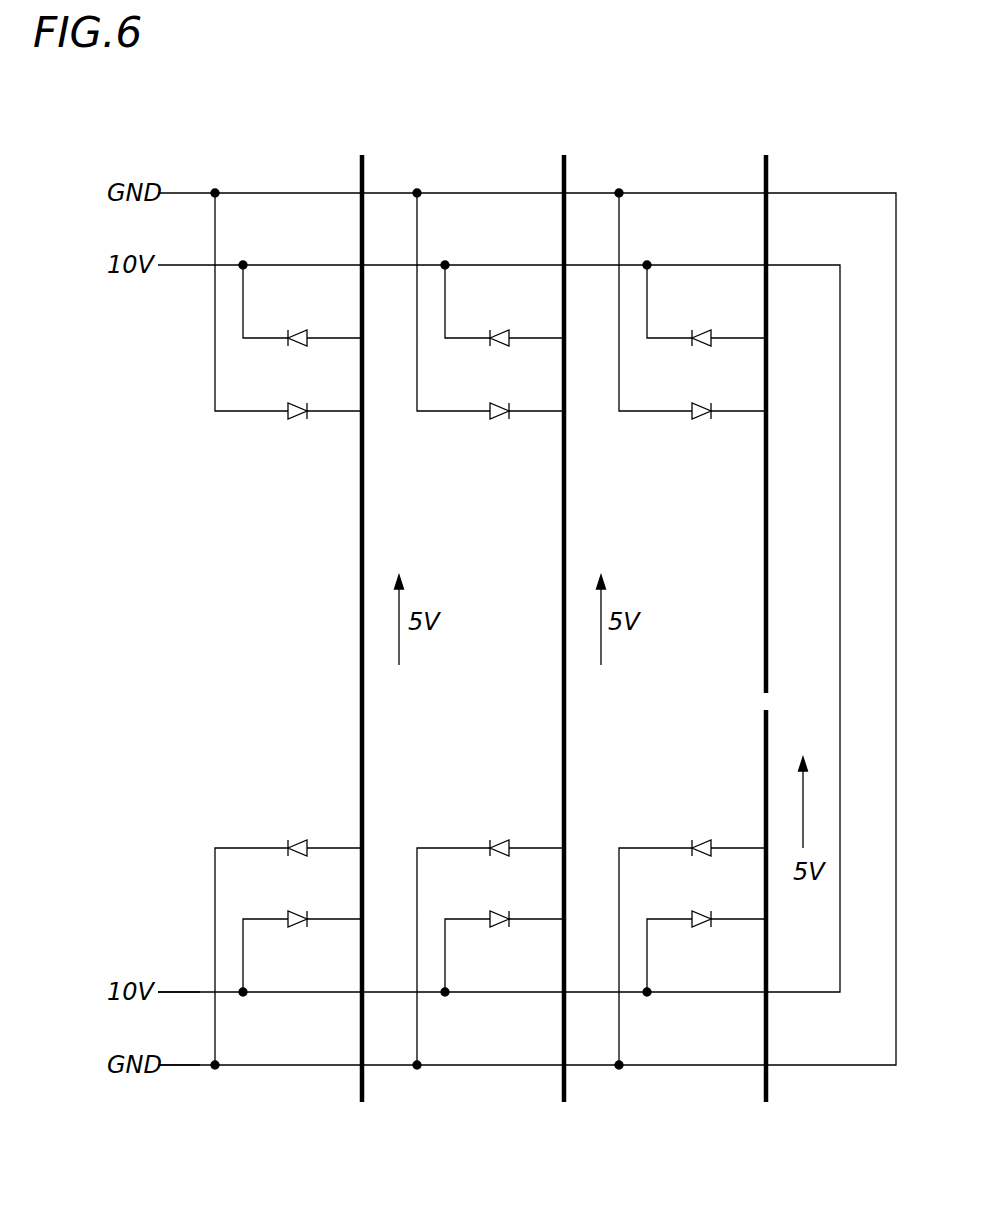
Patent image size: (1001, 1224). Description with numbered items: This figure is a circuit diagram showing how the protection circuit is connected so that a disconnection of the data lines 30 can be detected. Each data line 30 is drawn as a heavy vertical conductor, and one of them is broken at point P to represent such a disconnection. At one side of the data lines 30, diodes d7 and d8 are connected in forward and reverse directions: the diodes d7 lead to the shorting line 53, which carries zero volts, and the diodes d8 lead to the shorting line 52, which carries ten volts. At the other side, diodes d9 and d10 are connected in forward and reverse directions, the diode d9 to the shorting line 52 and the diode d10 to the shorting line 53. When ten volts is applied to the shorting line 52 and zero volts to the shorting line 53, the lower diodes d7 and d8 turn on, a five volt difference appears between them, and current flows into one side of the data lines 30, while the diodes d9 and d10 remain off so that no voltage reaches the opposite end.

The data line 30 is at (360, 701).
The break point in common electrode line P is at (742, 699).
The shorting line 52 is at (196, 992).
The shorting line 53 is at (196, 1066).
The diode d7 is at (500, 832).
The diode d8 is at (500, 903).
The diode d9 is at (500, 354).
The diode d10 is at (502, 428).